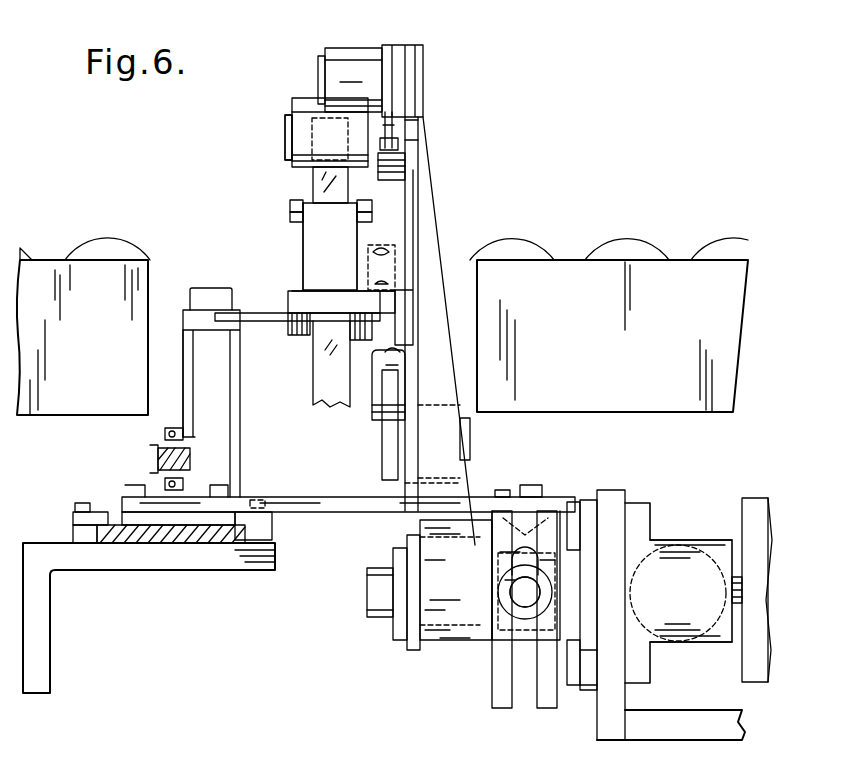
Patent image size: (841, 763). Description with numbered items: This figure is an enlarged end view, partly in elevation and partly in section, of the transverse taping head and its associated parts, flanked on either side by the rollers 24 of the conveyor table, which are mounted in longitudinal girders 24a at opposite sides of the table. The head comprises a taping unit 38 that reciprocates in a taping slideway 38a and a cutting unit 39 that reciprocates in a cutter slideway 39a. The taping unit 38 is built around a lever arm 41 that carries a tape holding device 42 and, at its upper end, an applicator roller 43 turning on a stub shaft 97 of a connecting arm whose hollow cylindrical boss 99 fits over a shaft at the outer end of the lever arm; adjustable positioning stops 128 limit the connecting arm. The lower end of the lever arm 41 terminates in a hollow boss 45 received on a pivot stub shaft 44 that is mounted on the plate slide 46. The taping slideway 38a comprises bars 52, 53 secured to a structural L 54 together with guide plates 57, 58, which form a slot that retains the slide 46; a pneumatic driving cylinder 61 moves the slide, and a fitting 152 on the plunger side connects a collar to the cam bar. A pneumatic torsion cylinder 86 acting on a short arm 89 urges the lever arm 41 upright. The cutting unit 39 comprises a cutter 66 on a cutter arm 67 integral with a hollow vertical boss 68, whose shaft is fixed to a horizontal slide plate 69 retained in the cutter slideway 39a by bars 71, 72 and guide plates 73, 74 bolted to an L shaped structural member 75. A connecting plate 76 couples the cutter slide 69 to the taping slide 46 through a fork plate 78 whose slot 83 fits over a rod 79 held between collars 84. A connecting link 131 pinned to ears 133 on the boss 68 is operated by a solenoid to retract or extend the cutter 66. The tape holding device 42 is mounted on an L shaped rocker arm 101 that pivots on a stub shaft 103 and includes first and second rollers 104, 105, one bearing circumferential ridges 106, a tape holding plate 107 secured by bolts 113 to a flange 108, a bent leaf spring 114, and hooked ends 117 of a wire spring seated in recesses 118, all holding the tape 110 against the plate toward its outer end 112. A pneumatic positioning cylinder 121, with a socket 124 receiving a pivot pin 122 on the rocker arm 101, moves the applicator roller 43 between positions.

The rollers 24 is at (82, 248).
The longitudinal girders 24a is at (96, 335).
The taping unit 38 is at (454, 134).
The taping slideway 38a is at (591, 699).
The cutting unit 39 is at (172, 375).
The cutter slideway 39a is at (149, 553).
The lever arm 41 is at (415, 275).
The tape holding device 42 is at (293, 250).
The applicator roller 43 is at (300, 98).
The stub shaft 44 is at (367, 596).
The hollow boss 45 is at (462, 628).
The plate slide 46 is at (600, 620).
The bar 52 is at (592, 686).
The bar 53 is at (607, 490).
The structural L 54 is at (705, 732).
The guide plate 57 is at (550, 704).
The guide plate 58 is at (587, 497).
The pneumatic driving cylinder 61 is at (690, 545).
The cutter 66 is at (378, 311).
The cutter arm 67 is at (268, 326).
The hollow vertical boss 68 is at (222, 403).
The horizontal slide plate 69 is at (228, 545).
The bar 71 is at (73, 533).
The bar 72 is at (273, 530).
The guide plate 73 is at (74, 508).
The guide plate 74 is at (272, 510).
The L shaped structural member 75 is at (45, 645).
The connecting plate 76 is at (392, 508).
The fork plate 78 is at (505, 540).
The rod 79 is at (535, 592).
The slot 83 is at (525, 702).
The collars 84 is at (498, 592).
The pneumatic torsion cylinder 86 is at (570, 500).
The short arm 89 is at (495, 490).
The stub shaft 97 is at (285, 125).
The hollow cylindrical boss 99 is at (356, 48).
The L shaped rocker arm 101 is at (382, 435).
The stub shaft 103 is at (472, 445).
The first roller 104 is at (290, 311).
The second roller 105 is at (300, 291).
The circumferential ridges 106 is at (300, 338).
The tape holding plate 107 is at (300, 254).
The flange 108 is at (382, 250).
The tape 110 is at (312, 178).
The outer end 112 is at (332, 184).
The bolts 113 is at (384, 284).
The bent leaf spring 114 is at (344, 253).
The hooked ends 117 is at (296, 203).
The recesses 118 is at (290, 215).
The pneumatic positioning cylinder 121 is at (400, 372).
The pivot pin 122 is at (372, 390).
The socket 124 is at (400, 356).
The adjustable positioning stops 128 is at (385, 140).
The connecting link 131 is at (158, 458).
The ears 133 is at (165, 436).
The fitting 152 is at (740, 590).